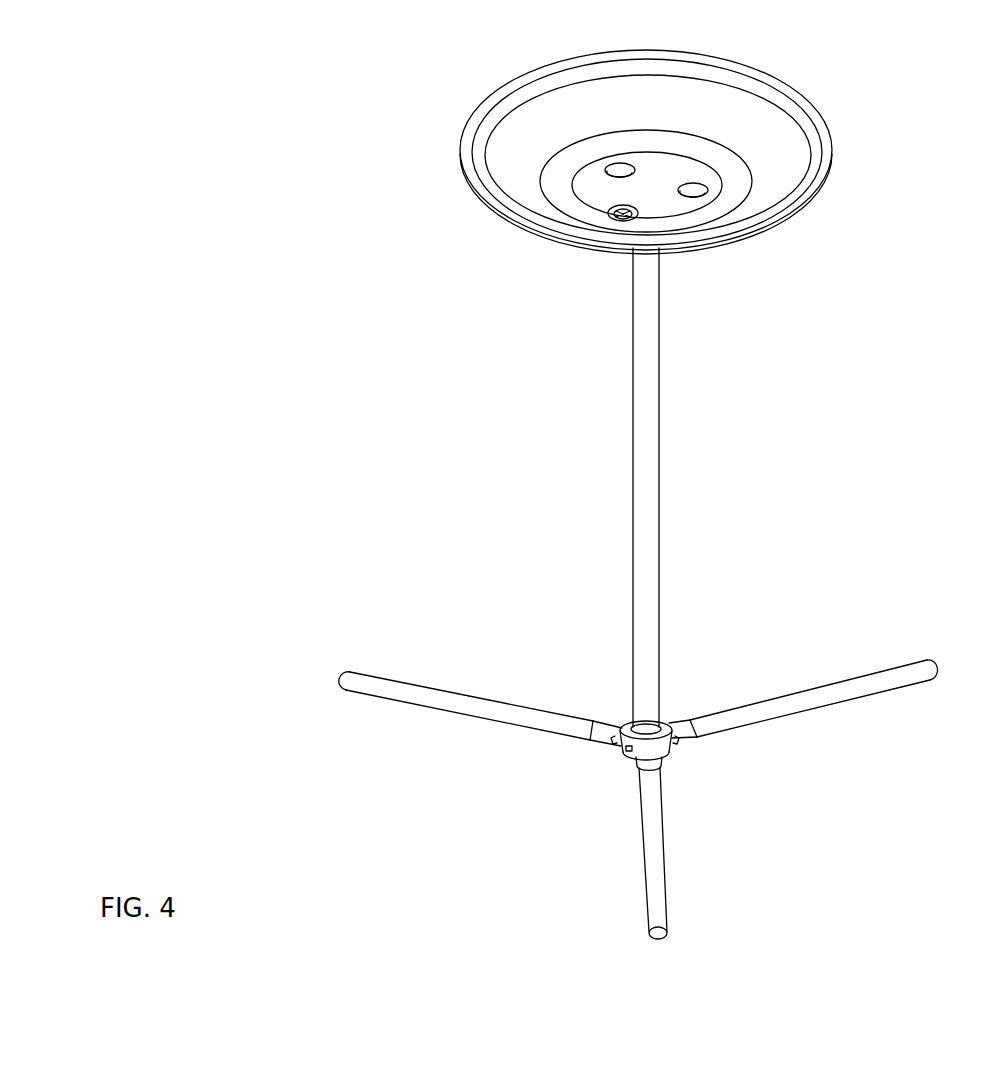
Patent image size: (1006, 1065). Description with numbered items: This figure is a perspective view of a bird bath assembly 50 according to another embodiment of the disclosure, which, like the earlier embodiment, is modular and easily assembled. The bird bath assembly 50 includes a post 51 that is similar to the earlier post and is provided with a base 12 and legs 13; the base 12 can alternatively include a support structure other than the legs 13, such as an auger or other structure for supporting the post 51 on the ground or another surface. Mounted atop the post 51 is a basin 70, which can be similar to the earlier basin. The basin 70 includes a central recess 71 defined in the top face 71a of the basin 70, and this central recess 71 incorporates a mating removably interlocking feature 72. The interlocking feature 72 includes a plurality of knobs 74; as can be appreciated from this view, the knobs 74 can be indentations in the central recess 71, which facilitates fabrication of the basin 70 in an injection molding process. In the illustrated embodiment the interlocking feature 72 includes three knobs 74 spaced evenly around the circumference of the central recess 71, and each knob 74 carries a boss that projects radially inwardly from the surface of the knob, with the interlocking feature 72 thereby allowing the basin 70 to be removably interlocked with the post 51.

The basin 70 is at (830, 122).
The central recess 71 is at (570, 150).
The top face 71a is at (673, 212).
The interlocking feature 72 is at (658, 172).
The knobs 74 is at (622, 177).
The bird bath assembly 50 is at (714, 457).
The post 51 is at (645, 521).
The base 12 is at (668, 747).
The legs 13 is at (513, 712).